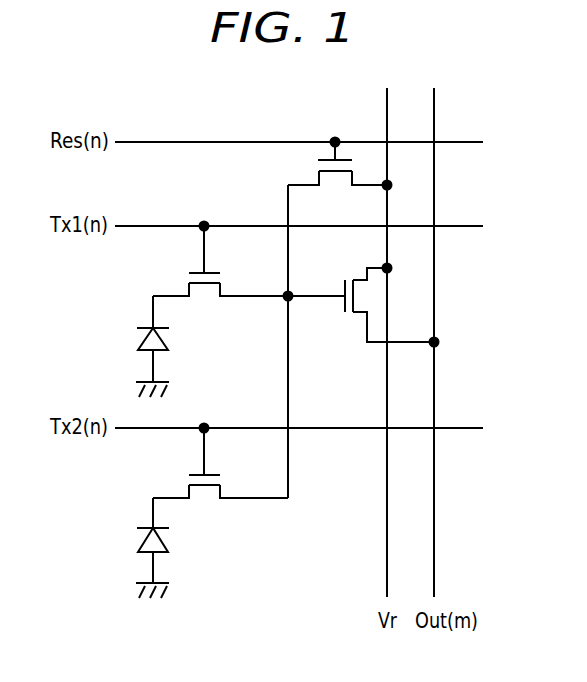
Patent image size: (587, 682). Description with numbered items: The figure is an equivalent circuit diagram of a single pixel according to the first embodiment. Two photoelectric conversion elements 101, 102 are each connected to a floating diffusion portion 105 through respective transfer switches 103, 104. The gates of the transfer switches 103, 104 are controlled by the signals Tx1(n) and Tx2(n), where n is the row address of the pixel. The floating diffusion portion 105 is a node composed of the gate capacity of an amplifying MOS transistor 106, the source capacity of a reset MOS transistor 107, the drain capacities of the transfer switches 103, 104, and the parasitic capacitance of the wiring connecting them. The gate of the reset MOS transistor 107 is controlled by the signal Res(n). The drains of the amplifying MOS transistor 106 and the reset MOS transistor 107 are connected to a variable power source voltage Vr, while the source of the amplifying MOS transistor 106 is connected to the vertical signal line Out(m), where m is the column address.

The photoelectric conversion element 101 is at (138, 337).
The photoelectric conversion element 102 is at (138, 538).
The transfer switch 103 is at (204, 290).
The transfer switch 104 is at (204, 492).
The floating diffusion portion 105 is at (282, 300).
The amplifying MOS transistor 106 is at (360, 305).
The reset MOS transistor 107 is at (335, 177).